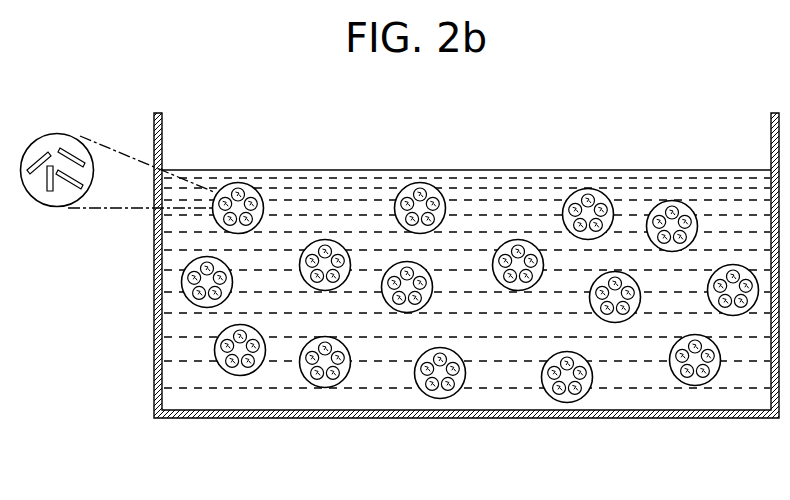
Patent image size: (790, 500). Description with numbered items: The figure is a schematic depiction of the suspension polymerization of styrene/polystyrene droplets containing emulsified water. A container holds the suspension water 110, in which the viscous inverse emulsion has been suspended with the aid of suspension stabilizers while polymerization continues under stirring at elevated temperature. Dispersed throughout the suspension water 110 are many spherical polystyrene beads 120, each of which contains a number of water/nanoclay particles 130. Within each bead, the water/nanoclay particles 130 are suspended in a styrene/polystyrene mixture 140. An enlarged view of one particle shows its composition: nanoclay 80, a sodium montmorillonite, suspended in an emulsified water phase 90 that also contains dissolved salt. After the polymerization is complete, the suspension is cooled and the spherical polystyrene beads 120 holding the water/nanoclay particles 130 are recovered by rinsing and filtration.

The nanoclay 80 is at (50, 143).
The emulsified water phase 90 is at (58, 198).
The suspension water 110 is at (640, 375).
The polystyrene beads 120 is at (654, 191).
The water/nanoclay particles 130 is at (118, 162).
The styrene/polystyrene mixture 140 is at (683, 205).